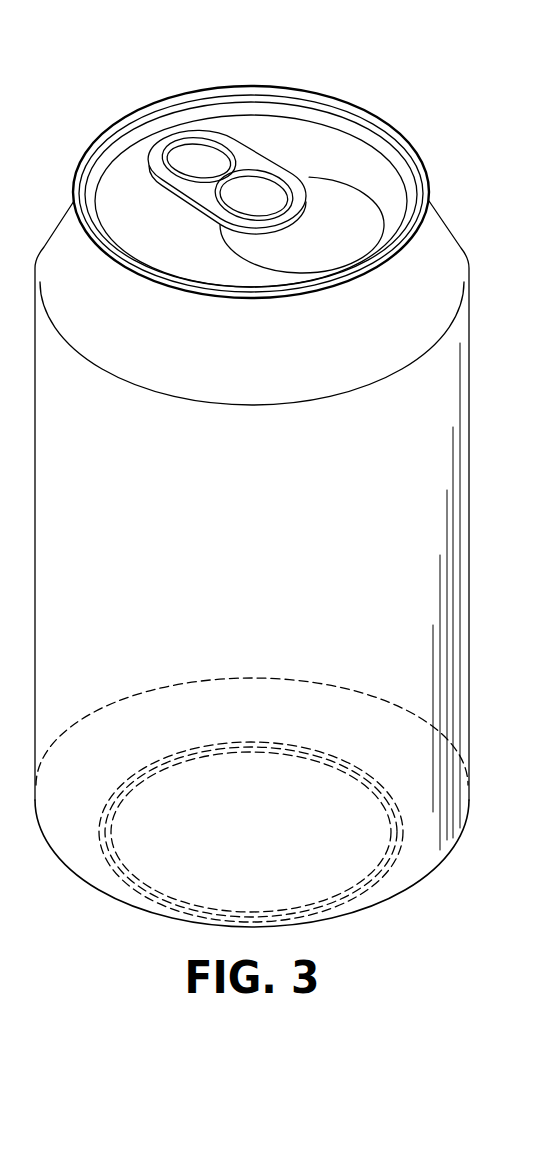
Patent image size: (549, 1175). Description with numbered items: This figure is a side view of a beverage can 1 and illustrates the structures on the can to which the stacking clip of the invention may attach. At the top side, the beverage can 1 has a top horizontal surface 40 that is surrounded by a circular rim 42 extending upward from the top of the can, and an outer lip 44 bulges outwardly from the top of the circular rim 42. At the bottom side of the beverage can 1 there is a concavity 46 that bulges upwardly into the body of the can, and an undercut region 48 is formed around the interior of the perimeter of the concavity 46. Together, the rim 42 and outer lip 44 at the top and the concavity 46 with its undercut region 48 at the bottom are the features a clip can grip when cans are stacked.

The beverage can 1 is at (136, 83).
The top horizontal surface 40 is at (200, 246).
The circular rim 42 is at (355, 100).
The outer lip 44 is at (302, 296).
The concavity 46 is at (266, 847).
The undercut region 48 is at (113, 837).